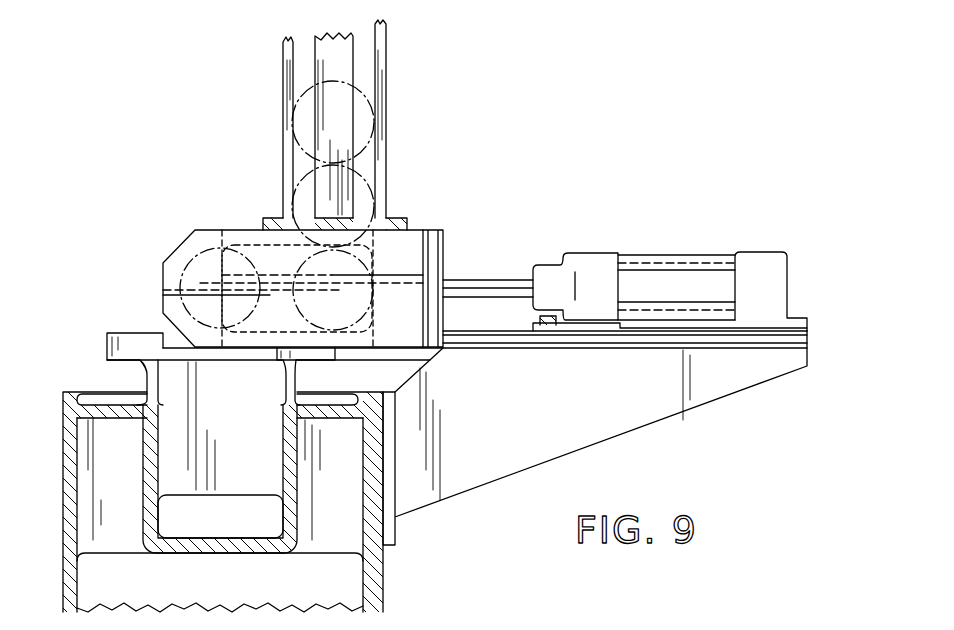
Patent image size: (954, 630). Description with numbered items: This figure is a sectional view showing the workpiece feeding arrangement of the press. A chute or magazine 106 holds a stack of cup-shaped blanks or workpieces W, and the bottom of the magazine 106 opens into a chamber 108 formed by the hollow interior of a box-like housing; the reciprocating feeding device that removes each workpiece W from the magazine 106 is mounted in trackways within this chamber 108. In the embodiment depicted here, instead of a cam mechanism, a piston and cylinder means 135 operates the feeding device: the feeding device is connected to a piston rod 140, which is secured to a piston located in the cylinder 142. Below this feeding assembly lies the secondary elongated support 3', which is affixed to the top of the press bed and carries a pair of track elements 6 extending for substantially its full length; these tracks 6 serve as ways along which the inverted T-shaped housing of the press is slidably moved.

The magazine 106 is at (283, 112).
The workpieces W is at (365, 112).
The chamber 108 is at (277, 272).
The piston rod 140 is at (472, 279).
The piston and cylinder means 135 is at (571, 248).
The cylinder 142 is at (666, 296).
The track elements 6 is at (133, 342).
The secondary elongated support 3' is at (238, 487).